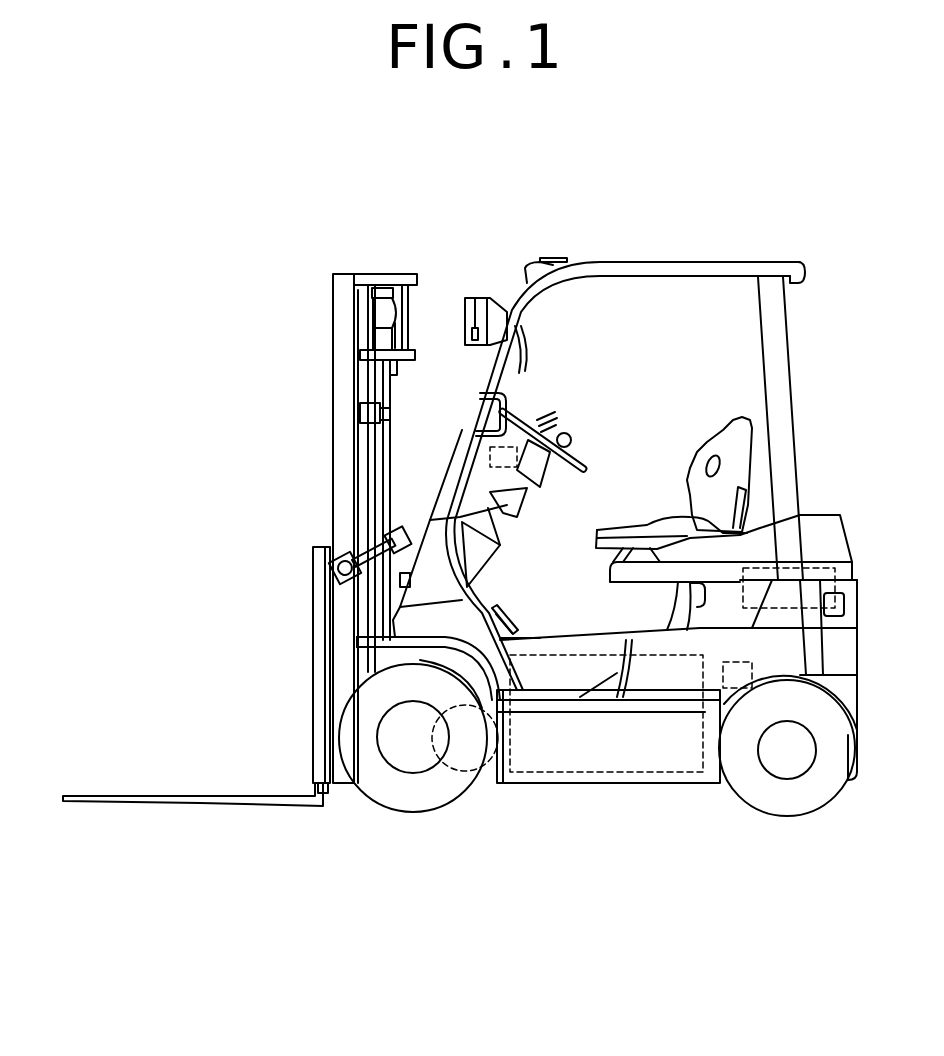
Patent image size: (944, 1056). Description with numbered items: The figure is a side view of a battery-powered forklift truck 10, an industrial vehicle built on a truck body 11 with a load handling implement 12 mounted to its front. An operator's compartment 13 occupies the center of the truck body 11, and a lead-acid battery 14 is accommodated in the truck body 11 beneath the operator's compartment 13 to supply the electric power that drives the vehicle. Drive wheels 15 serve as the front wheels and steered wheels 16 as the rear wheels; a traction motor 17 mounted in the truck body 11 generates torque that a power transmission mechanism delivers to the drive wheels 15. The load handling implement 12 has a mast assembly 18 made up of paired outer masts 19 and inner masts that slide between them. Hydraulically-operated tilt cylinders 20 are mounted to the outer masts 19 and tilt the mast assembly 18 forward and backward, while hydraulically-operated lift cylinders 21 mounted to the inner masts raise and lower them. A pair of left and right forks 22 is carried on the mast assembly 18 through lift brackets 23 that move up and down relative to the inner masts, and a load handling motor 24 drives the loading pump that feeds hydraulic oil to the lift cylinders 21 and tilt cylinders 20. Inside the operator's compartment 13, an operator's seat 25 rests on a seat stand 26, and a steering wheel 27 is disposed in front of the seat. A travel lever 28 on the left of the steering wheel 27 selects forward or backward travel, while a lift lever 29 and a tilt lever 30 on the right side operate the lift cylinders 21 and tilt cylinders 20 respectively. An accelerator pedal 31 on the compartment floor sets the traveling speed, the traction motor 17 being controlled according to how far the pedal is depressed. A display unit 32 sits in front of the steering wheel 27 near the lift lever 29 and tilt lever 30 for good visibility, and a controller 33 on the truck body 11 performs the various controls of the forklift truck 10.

The forklift truck 10 is at (661, 233).
The truck body 11 is at (557, 787).
The load handling implement 12 is at (336, 500).
The operator's compartment 13 is at (629, 423).
The battery 14 is at (653, 777).
The drive wheels 15 is at (375, 800).
The steered wheels 16 is at (820, 808).
The traction motor 17 is at (447, 768).
The mast assembly 18 is at (333, 408).
The outer masts 19 is at (340, 466).
The tilt cylinders 20 is at (400, 570).
The lift cylinders 21 is at (386, 441).
The forks 22 is at (250, 790).
The lift brackets 23 is at (313, 627).
The load handling motor 24 is at (742, 688).
The operator's seat 25 is at (730, 418).
The seat stand 26 is at (753, 538).
The steering wheel 27 is at (590, 462).
The travel lever 28 is at (520, 507).
The lift lever 29 is at (572, 432).
The tilt lever 30 is at (548, 420).
The accelerator pedal 31 is at (510, 617).
The display unit 32 is at (475, 467).
The controller 33 is at (743, 593).